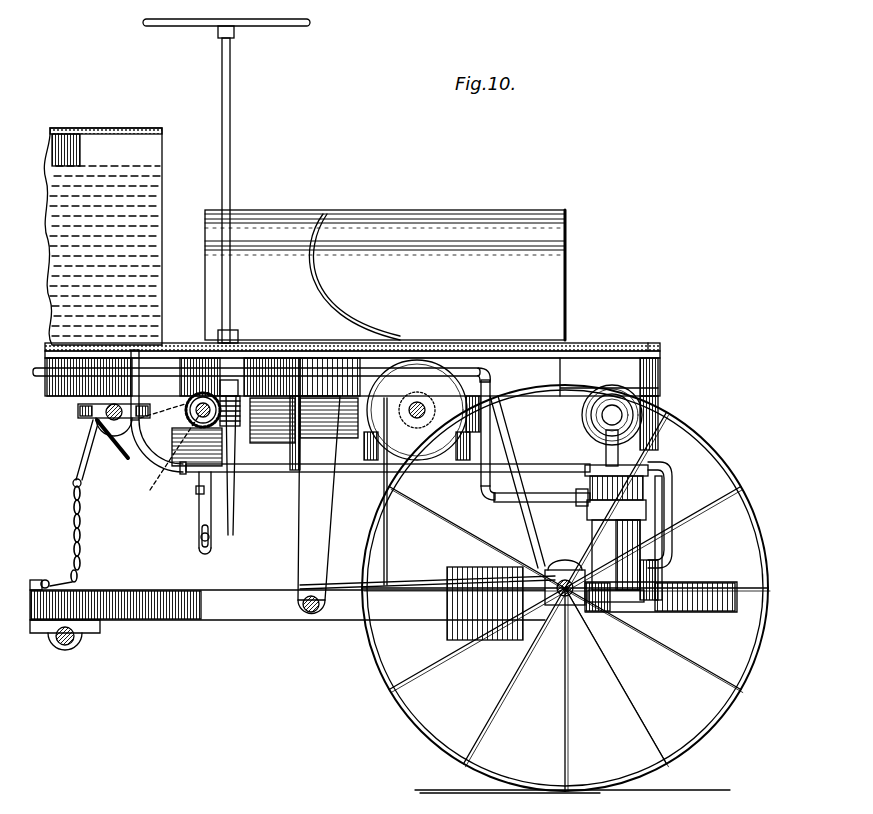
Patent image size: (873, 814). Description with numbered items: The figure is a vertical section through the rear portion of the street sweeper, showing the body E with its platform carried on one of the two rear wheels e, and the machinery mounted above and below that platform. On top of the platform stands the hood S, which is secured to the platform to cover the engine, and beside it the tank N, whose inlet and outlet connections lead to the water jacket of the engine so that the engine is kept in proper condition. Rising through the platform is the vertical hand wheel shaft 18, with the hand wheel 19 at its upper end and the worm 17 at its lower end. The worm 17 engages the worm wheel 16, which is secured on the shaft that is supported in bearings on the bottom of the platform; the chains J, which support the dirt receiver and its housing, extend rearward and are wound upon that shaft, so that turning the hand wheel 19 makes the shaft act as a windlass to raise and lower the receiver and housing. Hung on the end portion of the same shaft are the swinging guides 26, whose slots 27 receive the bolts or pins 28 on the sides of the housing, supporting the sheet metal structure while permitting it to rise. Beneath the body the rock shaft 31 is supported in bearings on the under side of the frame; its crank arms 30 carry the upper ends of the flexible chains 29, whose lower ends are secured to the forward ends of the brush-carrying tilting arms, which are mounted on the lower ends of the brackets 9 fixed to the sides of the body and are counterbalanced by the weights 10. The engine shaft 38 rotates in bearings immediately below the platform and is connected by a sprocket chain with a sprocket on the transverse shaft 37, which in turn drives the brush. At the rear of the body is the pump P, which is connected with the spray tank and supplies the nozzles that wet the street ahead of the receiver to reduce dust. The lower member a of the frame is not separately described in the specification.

The hand wheel 19 is at (301, 26).
The vertical hand wheel shaft 18 is at (222, 300).
The tank N is at (121, 124).
The hood S is at (492, 216).
The body E is at (627, 339).
The worm wheel 16 is at (140, 454).
The rock shaft 31 is at (80, 420).
The crank arms 30 is at (90, 446).
The chains 29 is at (73, 526).
The chains J is at (186, 453).
The worm 17 is at (232, 478).
The swinging guides 26 is at (198, 498).
The slots 27 is at (202, 523).
The bolts or pins 28 is at (212, 541).
The shaft 38 is at (430, 428).
The brackets 9 is at (320, 545).
The transverse shaft 37 is at (308, 612).
The axle beam a is at (190, 606).
The weights 10 is at (512, 628).
The rear wheels e is at (733, 721).
The pump P is at (668, 556).